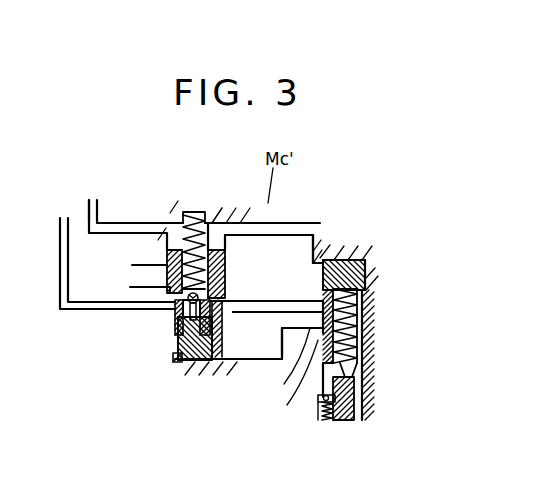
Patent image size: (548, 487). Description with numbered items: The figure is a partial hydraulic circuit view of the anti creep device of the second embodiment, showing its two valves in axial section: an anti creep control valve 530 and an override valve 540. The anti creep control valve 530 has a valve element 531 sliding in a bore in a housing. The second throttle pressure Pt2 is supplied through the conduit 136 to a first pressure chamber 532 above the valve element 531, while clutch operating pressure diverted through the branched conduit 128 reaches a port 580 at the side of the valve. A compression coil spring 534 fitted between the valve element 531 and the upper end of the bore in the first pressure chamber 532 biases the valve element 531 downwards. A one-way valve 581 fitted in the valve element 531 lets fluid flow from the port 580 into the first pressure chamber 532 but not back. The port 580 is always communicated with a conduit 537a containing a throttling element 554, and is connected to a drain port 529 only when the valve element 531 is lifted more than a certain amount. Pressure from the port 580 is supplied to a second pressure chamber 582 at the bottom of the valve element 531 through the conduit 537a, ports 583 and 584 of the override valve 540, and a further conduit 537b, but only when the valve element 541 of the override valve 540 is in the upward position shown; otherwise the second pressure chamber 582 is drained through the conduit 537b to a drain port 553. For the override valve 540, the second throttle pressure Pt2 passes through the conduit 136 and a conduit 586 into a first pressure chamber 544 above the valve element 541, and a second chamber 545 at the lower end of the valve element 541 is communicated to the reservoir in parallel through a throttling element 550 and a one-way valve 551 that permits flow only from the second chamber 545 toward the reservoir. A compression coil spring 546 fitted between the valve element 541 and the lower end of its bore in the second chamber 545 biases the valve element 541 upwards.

The branched conduit 128 is at (78, 310).
The second throttle pressure Pt2 is at (87, 206).
The conduit 136 is at (95, 216).
The override valve 540 is at (381, 270).
The conduit 586 is at (290, 227).
The first pressure chamber 532 is at (212, 222).
The valve element 541 is at (317, 270).
The drain port 529 is at (147, 265).
The one-way valve 581 is at (130, 287).
The compression coil spring 534 is at (186, 210).
The throttling element 554 is at (247, 305).
The anti creep control valve 530 is at (165, 377).
The valve element 531 is at (176, 343).
The port 580 is at (174, 305).
The second pressure chamber 582 is at (175, 364).
The conduit 537a is at (276, 328).
The conduit 537b is at (231, 362).
The port 583 is at (285, 358).
The port 584 is at (290, 375).
The first pressure chamber 544 is at (358, 258).
The drain port 553 is at (360, 325).
The compression coil spring 546 is at (358, 343).
The second chamber 545 is at (350, 370).
The throttling element 550 is at (358, 394).
The one-way valve 551 is at (316, 401).